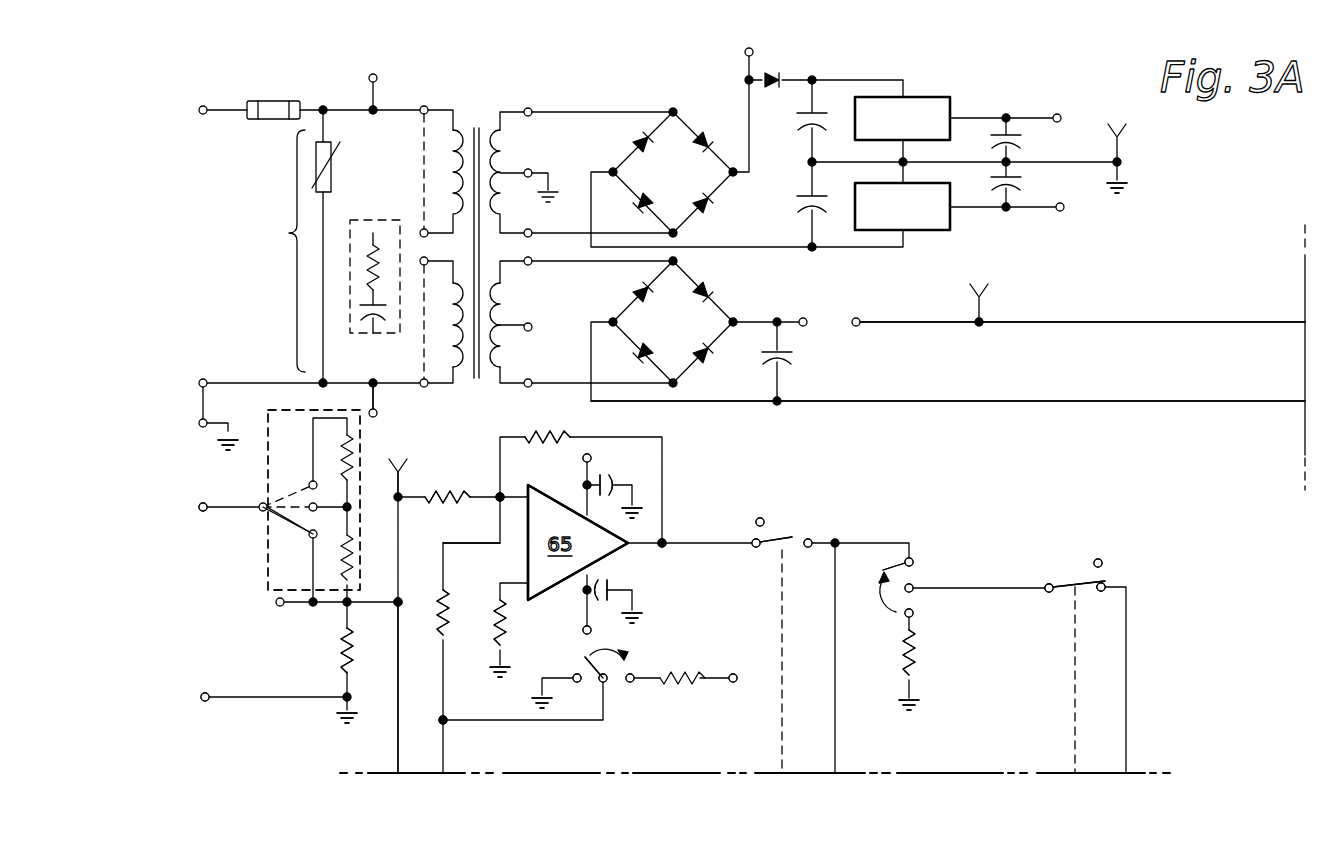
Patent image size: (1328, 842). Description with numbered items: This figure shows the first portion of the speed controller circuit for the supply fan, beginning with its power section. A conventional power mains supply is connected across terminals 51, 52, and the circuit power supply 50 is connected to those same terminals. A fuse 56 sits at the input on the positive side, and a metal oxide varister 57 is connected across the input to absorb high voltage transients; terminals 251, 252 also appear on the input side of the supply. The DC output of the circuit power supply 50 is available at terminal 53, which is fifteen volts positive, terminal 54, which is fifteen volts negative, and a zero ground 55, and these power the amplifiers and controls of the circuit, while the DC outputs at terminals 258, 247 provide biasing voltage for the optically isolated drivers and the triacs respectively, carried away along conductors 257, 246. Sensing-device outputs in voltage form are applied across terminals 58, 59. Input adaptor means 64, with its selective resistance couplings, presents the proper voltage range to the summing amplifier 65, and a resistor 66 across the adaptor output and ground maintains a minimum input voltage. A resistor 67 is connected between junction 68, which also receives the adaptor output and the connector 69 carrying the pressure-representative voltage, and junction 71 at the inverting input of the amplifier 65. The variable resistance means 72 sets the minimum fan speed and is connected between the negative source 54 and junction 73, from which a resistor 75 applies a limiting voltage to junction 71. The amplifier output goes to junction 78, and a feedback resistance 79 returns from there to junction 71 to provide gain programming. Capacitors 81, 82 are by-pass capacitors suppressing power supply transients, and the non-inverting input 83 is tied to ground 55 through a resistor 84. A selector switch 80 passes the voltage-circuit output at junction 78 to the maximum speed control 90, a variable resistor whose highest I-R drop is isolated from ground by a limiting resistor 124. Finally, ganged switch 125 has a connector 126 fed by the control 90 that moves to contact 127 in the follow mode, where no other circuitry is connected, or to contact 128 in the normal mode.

The circuit power supply 50 is at (277, 251).
The terminal 51 is at (197, 114).
The terminal 52 is at (197, 386).
The terminal 53 is at (1082, 110).
The terminal 54 is at (1060, 211).
The ground 55 is at (236, 432).
The fuse 56 is at (263, 106).
The metal oxide varister 57 is at (332, 178).
The terminal 58 is at (199, 509).
The terminal 59 is at (207, 691).
The input adaptor means 64 is at (269, 525).
The summing amplifier 65 is at (578, 542).
The resistor 66 is at (340, 654).
The resistor 67 is at (438, 494).
The junction 68 is at (402, 602).
The connector 69 is at (398, 676).
The junction 71 is at (504, 497).
The variable resistance means 72 is at (636, 660).
The junction 73 is at (448, 720).
The resistor 75 is at (447, 612).
The junction 78 is at (666, 548).
The resistance 79 is at (541, 434).
The selector switch 80 is at (778, 535).
The capacitor 81 is at (615, 478).
The capacitor 82 is at (615, 585).
The non-inverting input 83 is at (511, 578).
The resistor 84 is at (506, 620).
The maximum speed control 90 is at (896, 616).
The limiting resistor 124 is at (915, 656).
The ganged switch 125 is at (1073, 548).
The connector 126 is at (1057, 580).
The contact 127 is at (1104, 562).
The contact 128 is at (1101, 592).
The conductor 246 is at (1216, 394).
The terminal 247 is at (778, 405).
The terminal 251 is at (376, 78).
The terminal 252 is at (378, 413).
The conductor 257 is at (1216, 314).
The terminal 258 is at (858, 318).